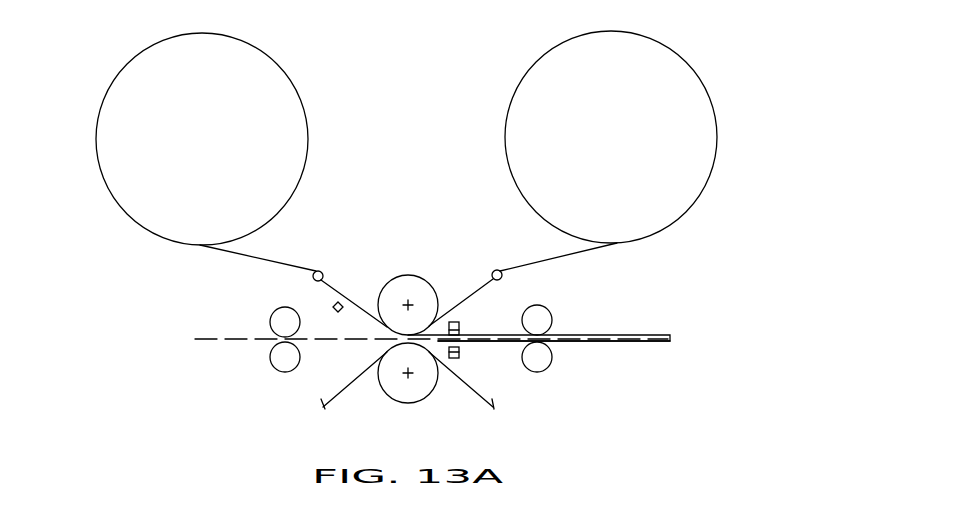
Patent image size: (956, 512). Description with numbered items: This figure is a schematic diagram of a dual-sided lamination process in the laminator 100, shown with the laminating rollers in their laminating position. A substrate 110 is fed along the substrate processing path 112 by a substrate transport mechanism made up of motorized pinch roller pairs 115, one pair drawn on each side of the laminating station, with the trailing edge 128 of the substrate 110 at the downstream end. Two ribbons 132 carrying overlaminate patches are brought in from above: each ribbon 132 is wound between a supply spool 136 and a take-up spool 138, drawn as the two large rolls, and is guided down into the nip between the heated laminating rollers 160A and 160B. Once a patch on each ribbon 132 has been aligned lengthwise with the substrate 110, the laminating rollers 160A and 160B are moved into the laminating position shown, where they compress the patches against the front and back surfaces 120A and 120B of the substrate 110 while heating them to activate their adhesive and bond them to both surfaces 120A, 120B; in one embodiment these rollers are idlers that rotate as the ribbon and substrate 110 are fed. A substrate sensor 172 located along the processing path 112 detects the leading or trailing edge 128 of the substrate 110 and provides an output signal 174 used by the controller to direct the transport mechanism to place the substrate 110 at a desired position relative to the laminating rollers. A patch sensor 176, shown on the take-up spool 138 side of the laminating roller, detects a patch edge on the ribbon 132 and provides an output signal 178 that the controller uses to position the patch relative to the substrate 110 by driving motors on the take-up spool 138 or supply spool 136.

The laminator 100 is at (742, 54).
The substrate 110 is at (660, 335).
The substrate processing path 112 is at (215, 338).
The motorized pinch roller pairs 115 is at (248, 360).
The front surface 120A is at (627, 323).
The back surface 120B is at (626, 355).
The trailing edge 128 is at (672, 341).
The ribbon 132 is at (567, 255).
The supply spool 136 is at (697, 167).
The take-up spool 138 is at (133, 207).
The laminating roller 160A is at (410, 275).
The laminating roller 160B is at (406, 400).
The substrate sensor 172 is at (459, 352).
The output signal 174 is at (468, 324).
The patch sensor 176 is at (343, 299).
The output signal 178 is at (324, 318).